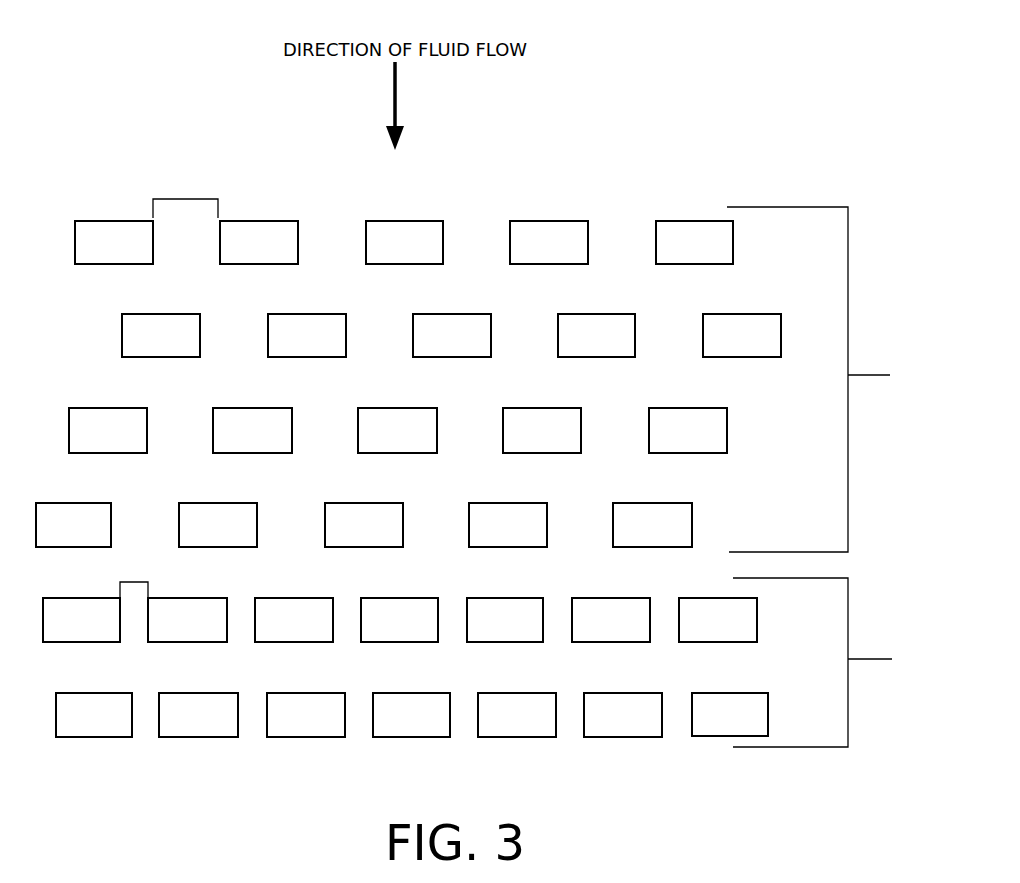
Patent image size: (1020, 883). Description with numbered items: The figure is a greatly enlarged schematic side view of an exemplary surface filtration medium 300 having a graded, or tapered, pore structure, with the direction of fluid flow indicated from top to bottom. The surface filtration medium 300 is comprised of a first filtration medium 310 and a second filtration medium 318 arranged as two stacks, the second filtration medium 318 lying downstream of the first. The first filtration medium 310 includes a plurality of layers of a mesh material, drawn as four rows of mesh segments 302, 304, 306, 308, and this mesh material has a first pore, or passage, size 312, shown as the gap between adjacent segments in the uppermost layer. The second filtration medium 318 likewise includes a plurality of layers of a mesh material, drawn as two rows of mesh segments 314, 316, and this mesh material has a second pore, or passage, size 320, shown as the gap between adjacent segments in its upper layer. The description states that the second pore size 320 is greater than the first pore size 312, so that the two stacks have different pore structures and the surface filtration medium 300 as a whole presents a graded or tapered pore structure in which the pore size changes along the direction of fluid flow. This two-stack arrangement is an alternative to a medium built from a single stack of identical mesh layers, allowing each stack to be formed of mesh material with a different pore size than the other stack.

The surface filtration medium 300 is at (755, 176).
The first row of baffles 302 is at (747, 242).
The second row of baffles 304 is at (790, 332).
The third row of baffles 306 is at (733, 432).
The fourth row of baffles 308 is at (700, 522).
The first filtration medium 310 is at (808, 379).
The first pore size 312 is at (185, 199).
The fifth row of baffles 314 is at (766, 633).
The sixth row of baffles 316 is at (776, 729).
The second filtration medium 318 is at (812, 662).
The second pore size 320 is at (133, 582).